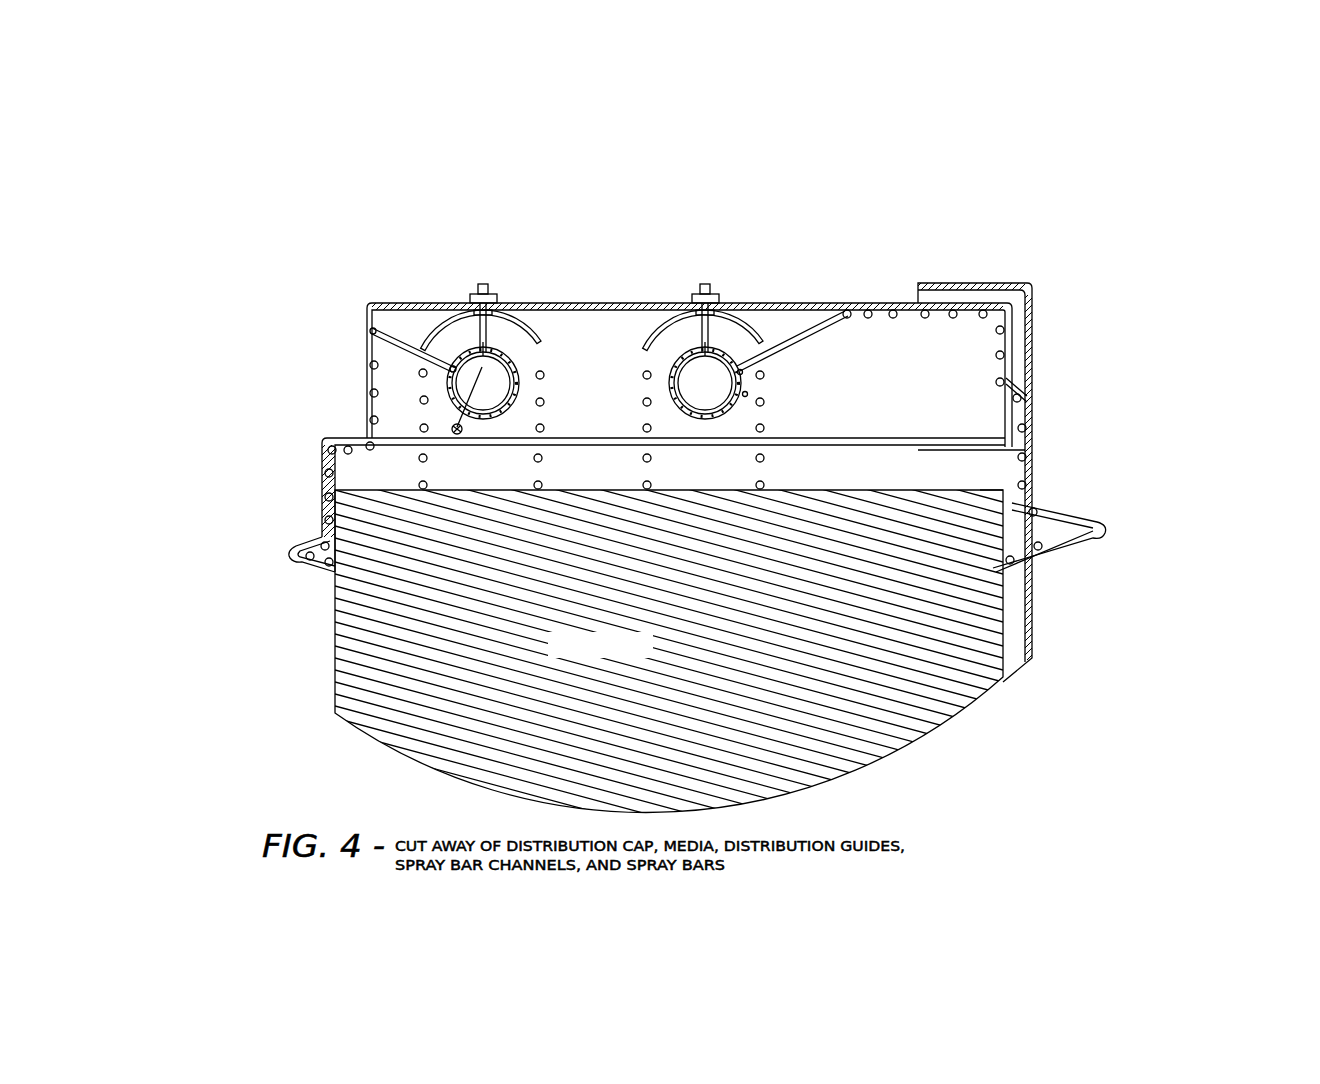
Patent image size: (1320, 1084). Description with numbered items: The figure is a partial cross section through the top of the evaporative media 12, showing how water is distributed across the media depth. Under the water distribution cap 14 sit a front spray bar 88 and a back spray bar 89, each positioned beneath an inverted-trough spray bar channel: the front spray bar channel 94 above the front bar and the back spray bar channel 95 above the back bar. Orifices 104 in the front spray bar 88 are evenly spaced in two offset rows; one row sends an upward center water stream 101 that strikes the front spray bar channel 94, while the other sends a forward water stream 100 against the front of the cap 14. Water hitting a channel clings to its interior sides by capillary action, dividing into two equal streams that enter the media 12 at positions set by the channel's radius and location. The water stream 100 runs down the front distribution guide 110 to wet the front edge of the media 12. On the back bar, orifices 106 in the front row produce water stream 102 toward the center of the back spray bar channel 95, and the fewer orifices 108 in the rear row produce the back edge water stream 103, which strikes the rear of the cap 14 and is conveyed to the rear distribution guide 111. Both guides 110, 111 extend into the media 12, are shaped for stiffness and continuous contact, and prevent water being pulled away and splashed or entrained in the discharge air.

The media 12 is at (669, 652).
The water distribution cap 14 is at (386, 300).
The front spray bar 88 is at (497, 360).
The back spray bar 89 is at (741, 368).
The front spray bar channel 94 is at (516, 312).
The back spray bar channel 95 is at (761, 338).
The water stream 100 is at (402, 342).
The water stream 101 is at (483, 344).
The water stream 102 is at (708, 345).
The back edge water stream 103 is at (823, 312).
The orifices 104 is at (452, 432).
The orifices 106 is at (745, 394).
The orifices 108 is at (741, 372).
The front distribution guide 110 is at (306, 453).
The rear distribution guide 111 is at (1040, 548).